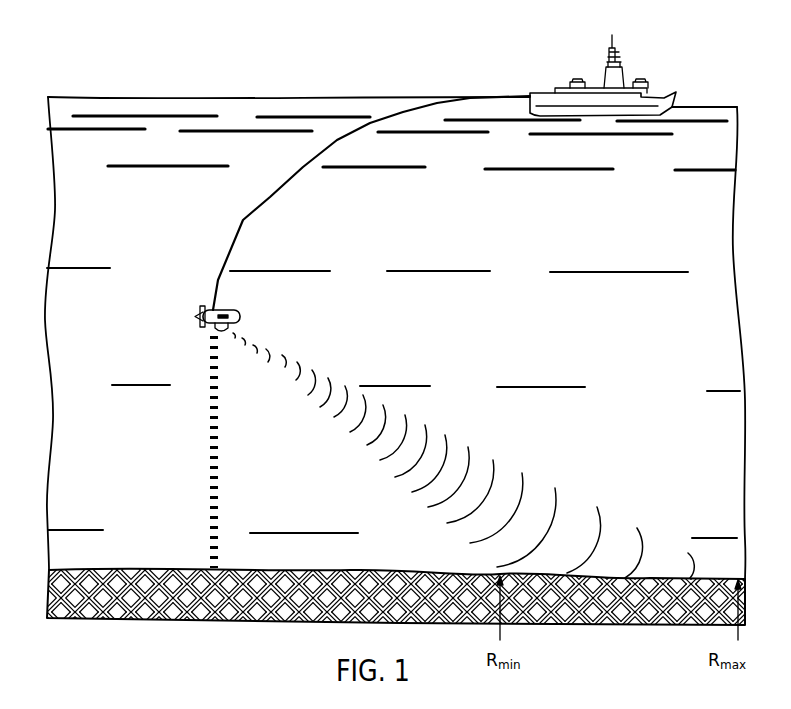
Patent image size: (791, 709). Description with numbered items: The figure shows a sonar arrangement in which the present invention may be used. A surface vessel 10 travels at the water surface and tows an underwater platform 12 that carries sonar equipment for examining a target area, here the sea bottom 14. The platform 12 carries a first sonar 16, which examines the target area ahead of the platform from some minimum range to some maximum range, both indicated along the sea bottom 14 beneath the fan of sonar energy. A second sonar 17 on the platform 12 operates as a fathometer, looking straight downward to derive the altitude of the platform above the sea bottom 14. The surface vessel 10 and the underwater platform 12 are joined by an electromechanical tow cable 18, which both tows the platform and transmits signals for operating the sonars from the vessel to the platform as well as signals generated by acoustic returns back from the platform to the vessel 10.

The surface vessel 10 is at (562, 87).
The underwater platform 12 is at (233, 311).
The sea bottom 14 is at (394, 576).
The first sonar 16 is at (223, 334).
The second sonar 17 is at (212, 329).
The electromechanical tow cable 18 is at (262, 203).